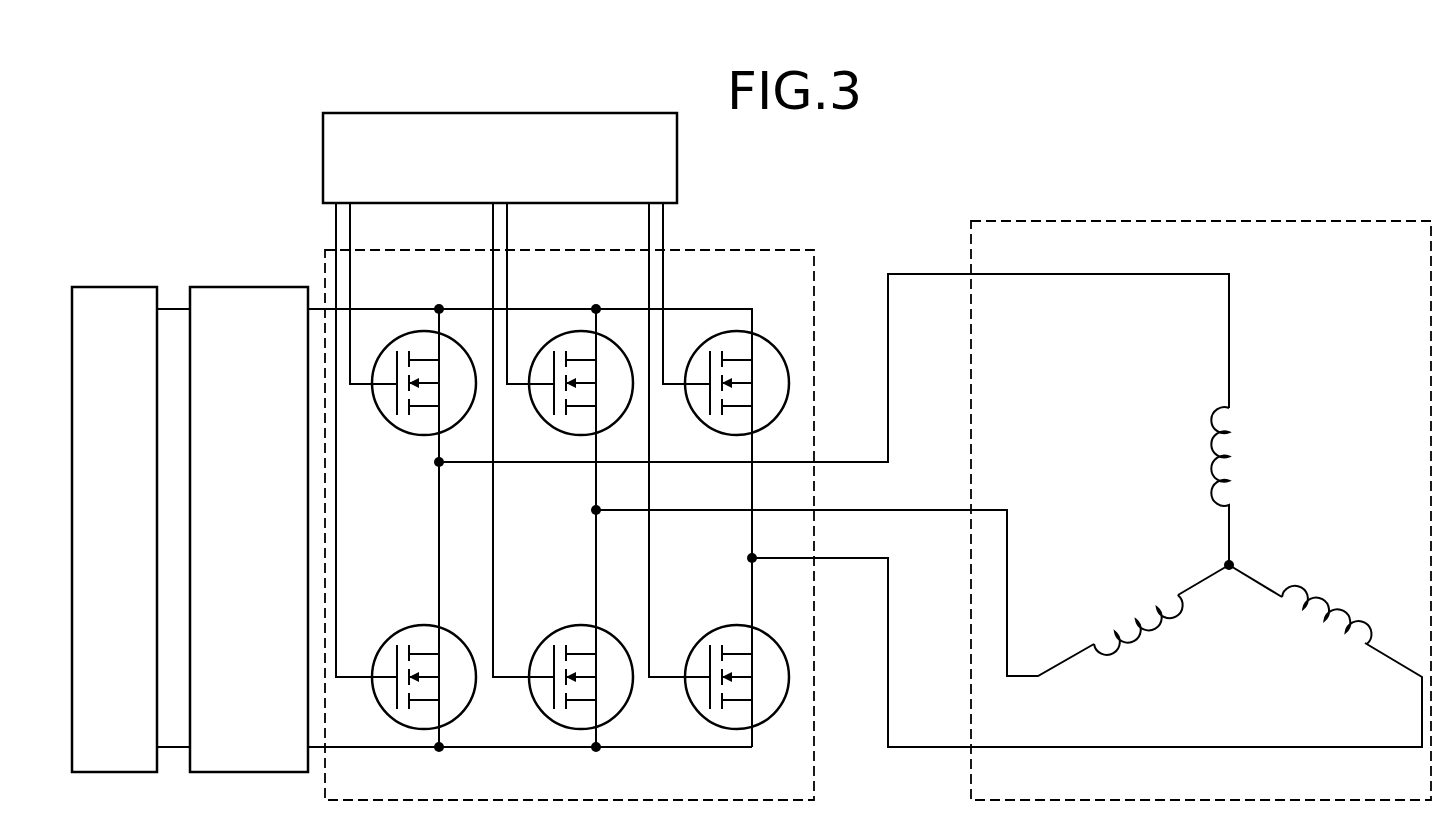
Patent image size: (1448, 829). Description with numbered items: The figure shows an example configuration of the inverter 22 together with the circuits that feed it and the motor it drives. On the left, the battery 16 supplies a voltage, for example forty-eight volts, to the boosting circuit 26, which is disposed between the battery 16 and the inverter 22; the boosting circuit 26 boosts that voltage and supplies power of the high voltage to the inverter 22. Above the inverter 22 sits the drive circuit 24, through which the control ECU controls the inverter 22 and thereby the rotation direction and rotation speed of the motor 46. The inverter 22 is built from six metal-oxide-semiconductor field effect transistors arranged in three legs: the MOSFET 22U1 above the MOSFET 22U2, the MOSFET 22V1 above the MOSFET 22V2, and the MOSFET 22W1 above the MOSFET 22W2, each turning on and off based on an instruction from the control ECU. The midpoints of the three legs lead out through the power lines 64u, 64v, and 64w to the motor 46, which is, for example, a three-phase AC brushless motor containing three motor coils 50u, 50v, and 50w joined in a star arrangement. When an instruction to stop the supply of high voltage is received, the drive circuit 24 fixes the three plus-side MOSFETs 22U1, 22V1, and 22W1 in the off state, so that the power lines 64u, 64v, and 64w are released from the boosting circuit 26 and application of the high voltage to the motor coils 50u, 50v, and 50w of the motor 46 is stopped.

The battery 16 is at (118, 287).
The boosting circuit 26 is at (249, 287).
The drive circuit 24 is at (515, 113).
The inverter 22 is at (795, 250).
The MOSFET 22U1 is at (400, 433).
The MOSFET 22V1 is at (557, 433).
The MOSFET 22W1 is at (717, 434).
The MOSFET 22U2 is at (400, 627).
The MOSFET 22V2 is at (557, 627).
The MOSFET 22W2 is at (717, 627).
The motor 46 is at (1210, 221).
The motor coil 50u is at (1222, 408).
The motor coil 50v is at (1096, 655).
The motor coil 50w is at (1370, 638).
The power line 64u is at (1061, 274).
The power line 64v is at (1008, 550).
The power line 64w is at (1210, 747).